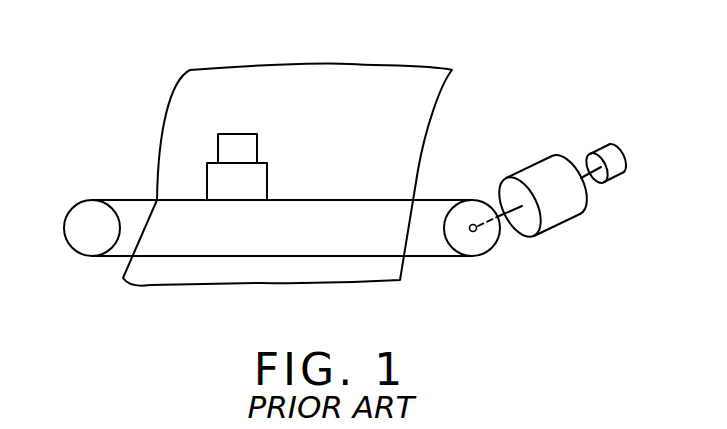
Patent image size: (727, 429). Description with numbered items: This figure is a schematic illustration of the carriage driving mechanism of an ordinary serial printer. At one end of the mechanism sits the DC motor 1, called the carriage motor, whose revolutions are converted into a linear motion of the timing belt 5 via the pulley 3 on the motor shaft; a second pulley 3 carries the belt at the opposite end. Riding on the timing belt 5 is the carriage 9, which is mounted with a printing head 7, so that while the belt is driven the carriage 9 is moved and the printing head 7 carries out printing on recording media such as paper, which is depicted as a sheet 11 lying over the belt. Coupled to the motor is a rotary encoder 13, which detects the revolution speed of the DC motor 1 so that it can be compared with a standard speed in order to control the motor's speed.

The DC motor 1 is at (545, 163).
The pulley 3 is at (74, 219).
The timing belt 5 is at (430, 200).
The printing head 7 is at (257, 141).
The carriage 9 is at (267, 183).
The paper sheet 11 is at (343, 64).
The rotary encoder 13 is at (640, 160).